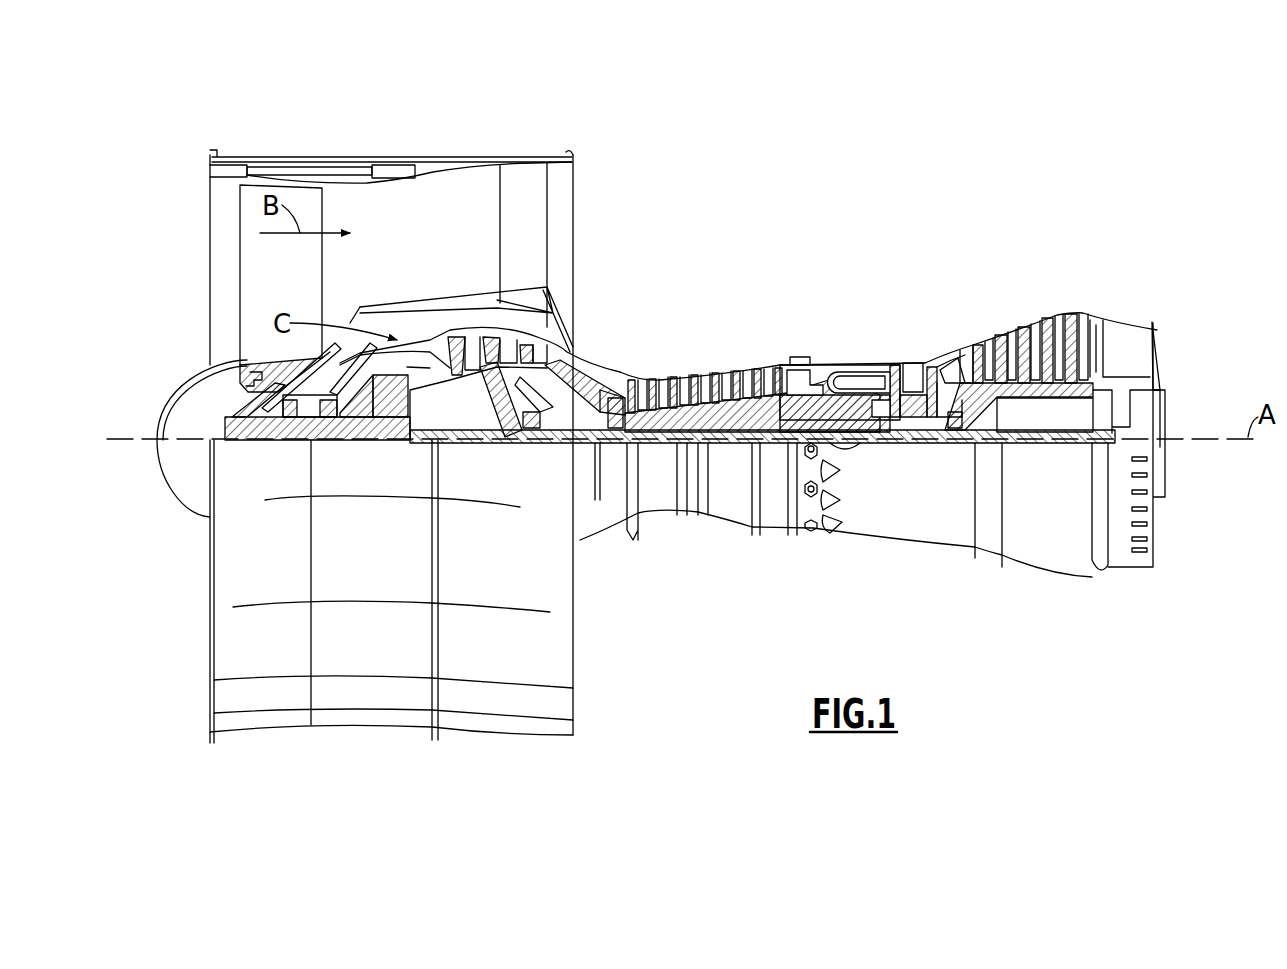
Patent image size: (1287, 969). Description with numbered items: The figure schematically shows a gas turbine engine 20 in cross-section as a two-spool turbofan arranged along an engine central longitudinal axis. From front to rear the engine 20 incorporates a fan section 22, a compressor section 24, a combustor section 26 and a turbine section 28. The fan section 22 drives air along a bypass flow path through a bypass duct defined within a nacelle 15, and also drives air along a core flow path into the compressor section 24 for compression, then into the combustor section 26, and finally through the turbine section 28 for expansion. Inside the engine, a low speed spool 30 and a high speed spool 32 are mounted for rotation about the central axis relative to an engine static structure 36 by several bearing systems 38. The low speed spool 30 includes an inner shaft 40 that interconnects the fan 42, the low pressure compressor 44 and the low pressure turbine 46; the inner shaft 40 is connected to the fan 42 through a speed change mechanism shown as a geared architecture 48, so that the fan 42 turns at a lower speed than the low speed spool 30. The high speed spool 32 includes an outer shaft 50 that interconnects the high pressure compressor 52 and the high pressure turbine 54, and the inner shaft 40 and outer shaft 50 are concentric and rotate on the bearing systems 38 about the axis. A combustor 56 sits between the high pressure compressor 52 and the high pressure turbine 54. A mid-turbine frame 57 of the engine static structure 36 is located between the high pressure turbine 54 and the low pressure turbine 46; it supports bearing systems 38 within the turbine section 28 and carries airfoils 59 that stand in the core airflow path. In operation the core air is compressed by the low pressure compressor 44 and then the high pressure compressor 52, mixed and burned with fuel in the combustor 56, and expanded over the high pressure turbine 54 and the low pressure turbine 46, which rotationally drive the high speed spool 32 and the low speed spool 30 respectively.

The nacelle 15 is at (395, 162).
The gas turbine engine 20 is at (853, 208).
The fan section 22 is at (321, 148).
The compressor section 24 is at (622, 350).
The combustor section 26 is at (848, 336).
The turbine section 28 is at (992, 303).
The low speed spool 30 is at (732, 452).
The high speed spool 32 is at (776, 368).
The engine static structure 36 is at (772, 532).
The bearing systems 38 is at (530, 437).
The inner shaft 40 is at (595, 447).
The fan 42 is at (294, 286).
The low pressure compressor 44 is at (490, 352).
The low pressure turbine 46 is at (1040, 337).
The geared architecture 48 is at (400, 428).
The outer shaft 50 is at (857, 432).
The high pressure compressor 52 is at (707, 407).
The high pressure turbine 54 is at (913, 362).
The combustor 56 is at (847, 383).
The mid-turbine frame 57 is at (953, 355).
The airfoils 59 is at (950, 377).